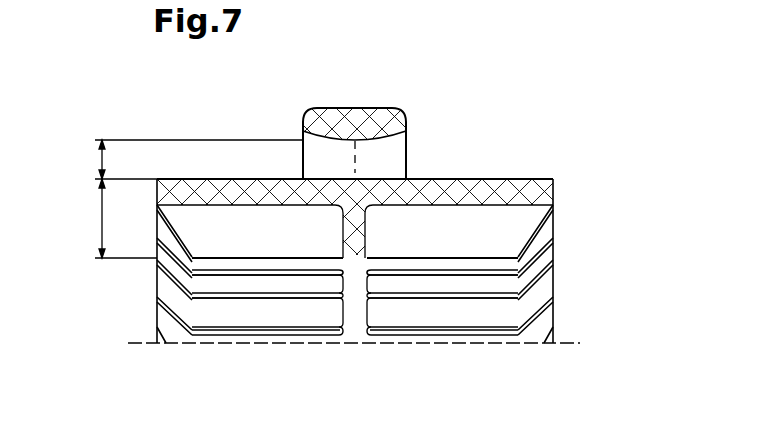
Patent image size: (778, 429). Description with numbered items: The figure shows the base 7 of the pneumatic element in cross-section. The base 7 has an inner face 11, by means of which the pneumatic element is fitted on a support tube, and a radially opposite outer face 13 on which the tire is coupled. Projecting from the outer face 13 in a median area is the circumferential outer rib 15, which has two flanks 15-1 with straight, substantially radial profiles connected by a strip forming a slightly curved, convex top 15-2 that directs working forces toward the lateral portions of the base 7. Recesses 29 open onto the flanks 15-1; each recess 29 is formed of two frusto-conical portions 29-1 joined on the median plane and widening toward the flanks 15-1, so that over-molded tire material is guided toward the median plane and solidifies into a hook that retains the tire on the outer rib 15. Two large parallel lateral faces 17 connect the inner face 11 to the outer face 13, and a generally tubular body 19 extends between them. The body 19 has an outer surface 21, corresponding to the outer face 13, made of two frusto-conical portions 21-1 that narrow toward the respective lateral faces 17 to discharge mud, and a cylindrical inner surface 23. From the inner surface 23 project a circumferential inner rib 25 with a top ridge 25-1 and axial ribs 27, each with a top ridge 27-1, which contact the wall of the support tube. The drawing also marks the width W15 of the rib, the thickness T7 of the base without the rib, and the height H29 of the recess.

The base 7 is at (513, 222).
The inner face 11 is at (358, 270).
The outer face 13 is at (200, 165).
The outer rib 15 is at (330, 123).
The flanks 15-1 is at (288, 134).
The top 15-2 is at (363, 102).
The lateral faces 17 is at (145, 271).
The tubular body 19 is at (519, 180).
The outer surface 21 is at (498, 179).
The frusto-conical portions 21-1 is at (173, 181).
The inner surface 23 is at (284, 216).
The inner rib 25 is at (353, 245).
The top ridge 25-1 is at (348, 300).
The axial ribs 27 is at (552, 229).
The top ridge 27-1 is at (227, 272).
The recesses 29 is at (387, 153).
The frusto-conical portions 29-1 is at (330, 177).
The height of recess H29 is at (96, 159).
The thickness of base without rib T7 is at (100, 217).
The width of rib W15 is at (651, 428).